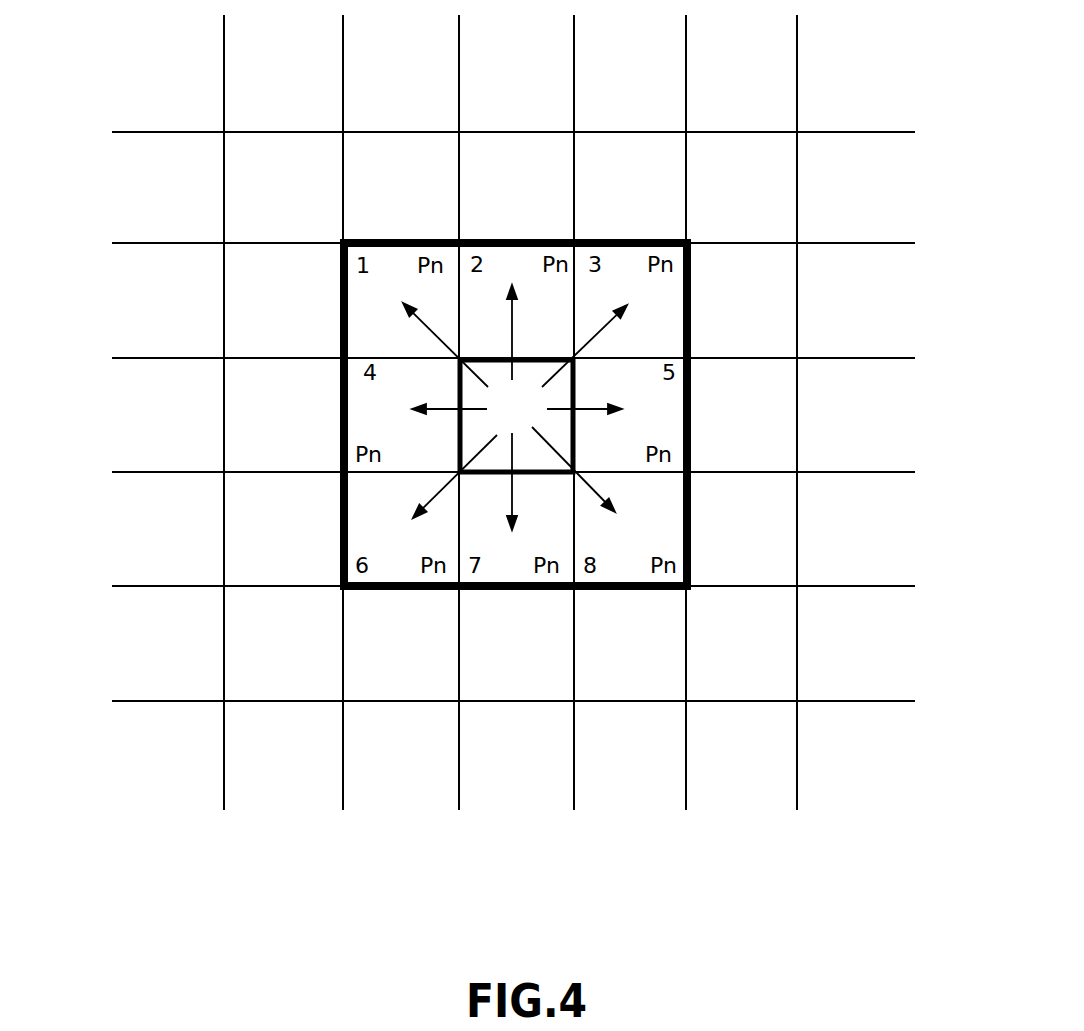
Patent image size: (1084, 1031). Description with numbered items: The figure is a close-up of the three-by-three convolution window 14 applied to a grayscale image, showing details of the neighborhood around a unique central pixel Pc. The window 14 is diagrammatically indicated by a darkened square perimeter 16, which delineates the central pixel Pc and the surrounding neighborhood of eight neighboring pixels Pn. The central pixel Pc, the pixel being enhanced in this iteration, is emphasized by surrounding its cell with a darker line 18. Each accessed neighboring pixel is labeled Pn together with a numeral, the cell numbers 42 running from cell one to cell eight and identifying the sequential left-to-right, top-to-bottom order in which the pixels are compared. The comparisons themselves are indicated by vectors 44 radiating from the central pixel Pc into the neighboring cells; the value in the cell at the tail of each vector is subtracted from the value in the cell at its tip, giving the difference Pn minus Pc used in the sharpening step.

The convolution window 14 is at (411, 222).
The darkened square perimeter 16 is at (512, 240).
The darker line 18 is at (578, 383).
The cell numbers 42 is at (336, 400).
The vectors 44 is at (654, 498).